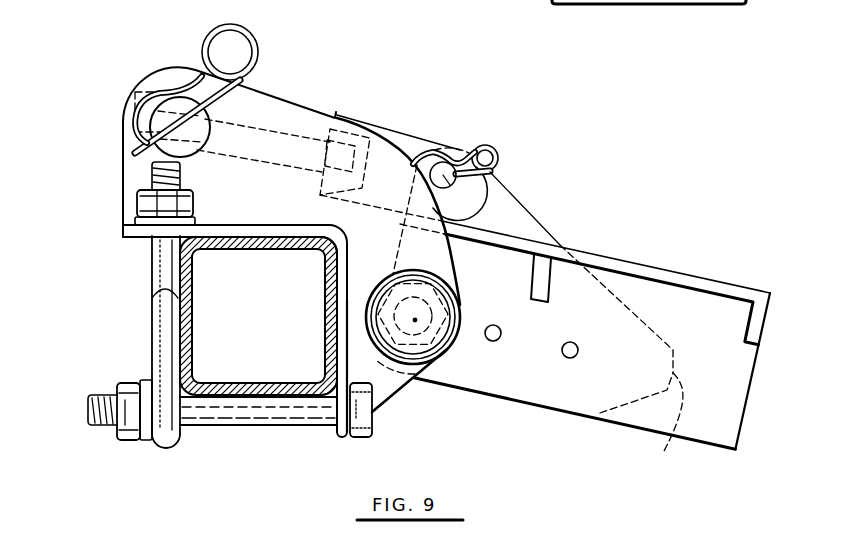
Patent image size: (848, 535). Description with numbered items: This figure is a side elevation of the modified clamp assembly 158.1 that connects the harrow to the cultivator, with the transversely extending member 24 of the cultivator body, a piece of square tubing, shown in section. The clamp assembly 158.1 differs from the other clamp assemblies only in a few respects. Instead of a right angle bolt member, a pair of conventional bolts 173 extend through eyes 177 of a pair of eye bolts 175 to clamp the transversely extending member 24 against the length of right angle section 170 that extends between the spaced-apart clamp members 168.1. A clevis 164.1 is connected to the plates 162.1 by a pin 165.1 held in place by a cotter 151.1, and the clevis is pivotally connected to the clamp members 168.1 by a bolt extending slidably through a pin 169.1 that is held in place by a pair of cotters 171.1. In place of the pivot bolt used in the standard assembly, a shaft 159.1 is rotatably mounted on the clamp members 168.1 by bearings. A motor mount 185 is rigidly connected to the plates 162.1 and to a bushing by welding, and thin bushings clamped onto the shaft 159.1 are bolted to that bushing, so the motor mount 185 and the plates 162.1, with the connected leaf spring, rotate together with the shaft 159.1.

The clamp assembly 158.1 is at (447, 445).
The clamp members 168.1 is at (290, 123).
The clevis 164.1 is at (407, 146).
The cotter 151.1 is at (495, 147).
The pin 165.1 is at (498, 181).
The motor mount 185 is at (680, 273).
The plates 162.1 is at (663, 453).
The shaft 159.1 is at (415, 320).
The right angle section 170 is at (348, 358).
The transversely extending member 24 is at (290, 248).
The eye bolts 175 is at (158, 312).
The bolts 173 is at (242, 413).
The eyes 177 is at (167, 446).
The pin 169.1 is at (195, 130).
The cotters 171.1 is at (215, 25).